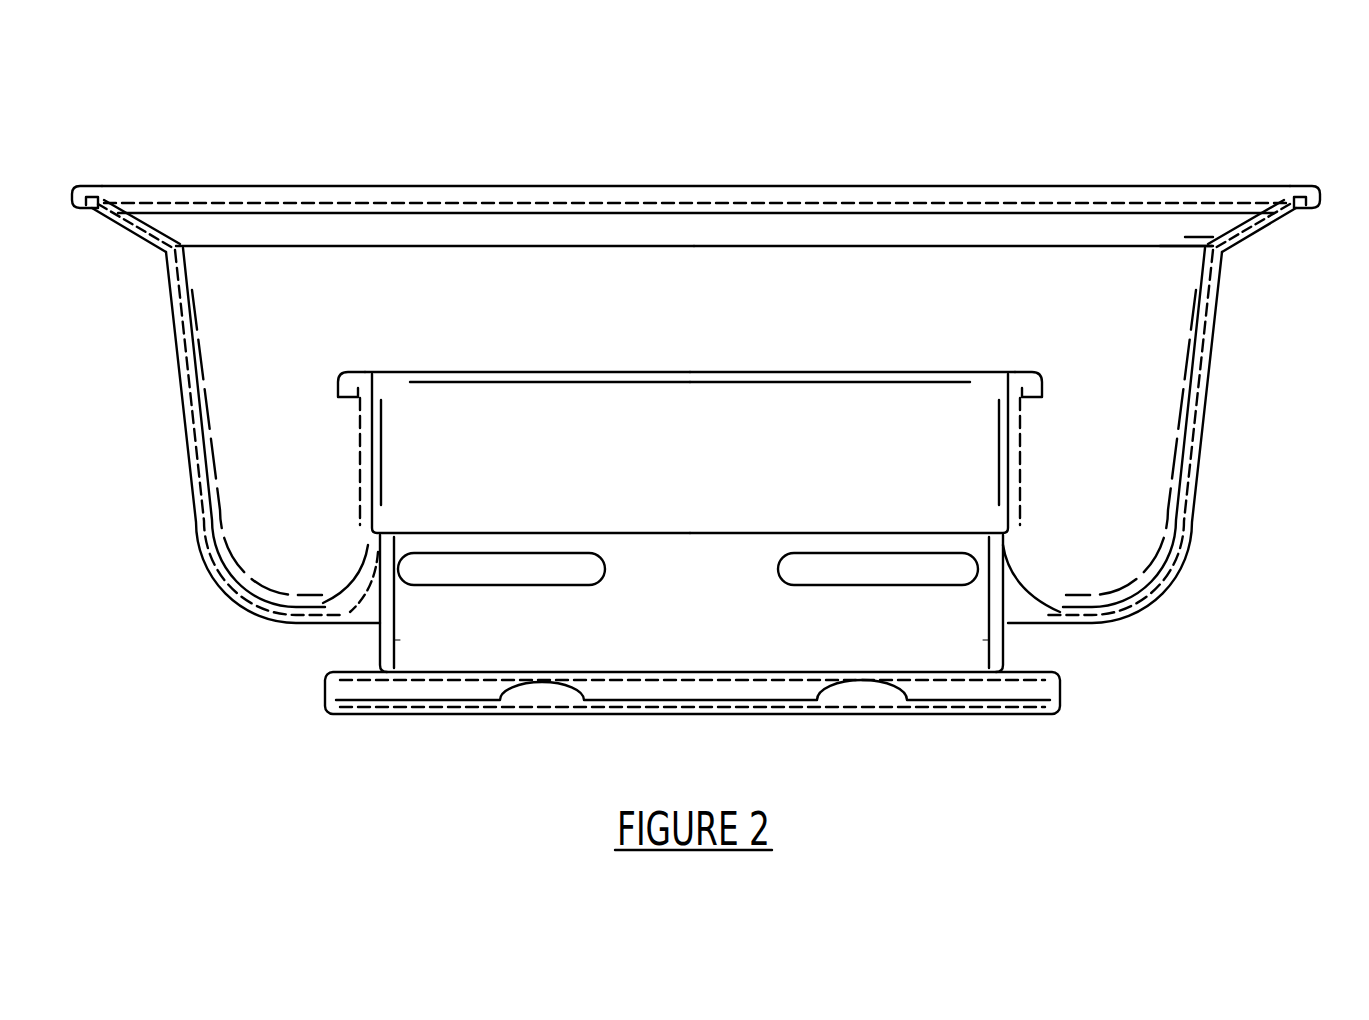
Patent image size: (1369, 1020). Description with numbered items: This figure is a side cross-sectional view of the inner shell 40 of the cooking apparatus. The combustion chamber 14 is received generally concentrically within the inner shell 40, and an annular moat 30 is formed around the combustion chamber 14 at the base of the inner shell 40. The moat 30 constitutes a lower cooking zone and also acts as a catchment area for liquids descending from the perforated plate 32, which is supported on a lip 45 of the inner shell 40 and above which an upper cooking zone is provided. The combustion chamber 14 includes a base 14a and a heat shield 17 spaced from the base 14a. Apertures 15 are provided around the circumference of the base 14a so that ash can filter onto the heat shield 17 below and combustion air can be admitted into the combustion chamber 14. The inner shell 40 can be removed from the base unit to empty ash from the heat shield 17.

The inner shell 40 is at (1104, 140).
The perforated plate 32 is at (889, 222).
The lip 45 is at (1267, 223).
The combustion chamber 14 is at (920, 408).
The annular moat 30 is at (1130, 465).
The base 14a is at (727, 610).
The apertures 15 is at (1063, 755).
The heat shield 17 is at (957, 713).